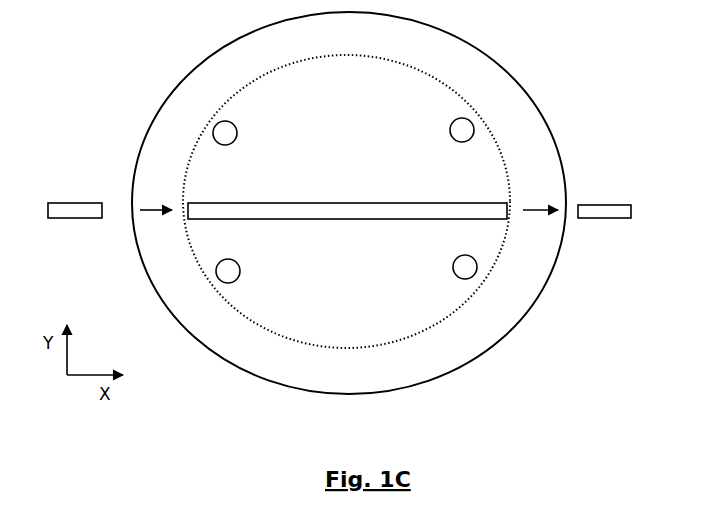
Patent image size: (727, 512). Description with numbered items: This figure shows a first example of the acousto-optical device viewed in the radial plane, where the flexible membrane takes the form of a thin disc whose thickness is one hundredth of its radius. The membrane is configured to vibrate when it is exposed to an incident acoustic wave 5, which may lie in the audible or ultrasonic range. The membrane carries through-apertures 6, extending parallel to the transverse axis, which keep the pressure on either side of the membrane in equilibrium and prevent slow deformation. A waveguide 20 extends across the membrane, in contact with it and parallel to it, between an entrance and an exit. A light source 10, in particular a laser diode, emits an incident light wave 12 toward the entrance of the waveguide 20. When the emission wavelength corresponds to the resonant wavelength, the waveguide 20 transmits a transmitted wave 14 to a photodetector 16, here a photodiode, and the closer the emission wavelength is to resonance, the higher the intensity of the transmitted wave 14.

The incident acoustic wave 5 is at (328, 75).
The through-apertures 6 is at (226, 136).
The light source 10 is at (74, 212).
The incident light wave 12 is at (158, 206).
The transmitted wave 14 is at (541, 206).
The photodetector 16 is at (605, 208).
The waveguide 20 is at (357, 207).